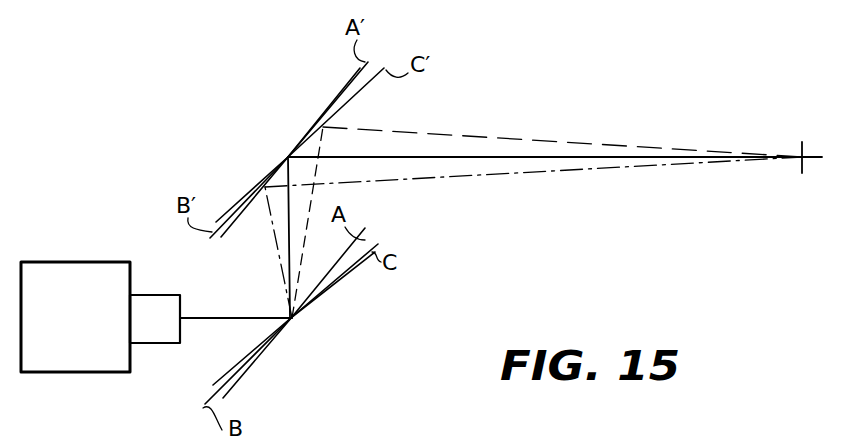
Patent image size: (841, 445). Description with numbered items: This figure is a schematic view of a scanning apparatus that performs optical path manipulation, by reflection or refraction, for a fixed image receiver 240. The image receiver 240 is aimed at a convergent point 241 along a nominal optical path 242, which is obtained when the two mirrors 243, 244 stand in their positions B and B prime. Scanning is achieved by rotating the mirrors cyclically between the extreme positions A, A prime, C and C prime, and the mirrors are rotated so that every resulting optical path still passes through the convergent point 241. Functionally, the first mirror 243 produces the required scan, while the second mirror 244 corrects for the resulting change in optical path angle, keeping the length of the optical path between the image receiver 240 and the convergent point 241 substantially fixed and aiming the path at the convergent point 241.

The fixed image receiver 240 is at (88, 262).
The convergent point 241 is at (800, 152).
The nominal optical path 242 is at (440, 150).
The mirror 243 is at (296, 318).
The mirror 244 is at (287, 156).